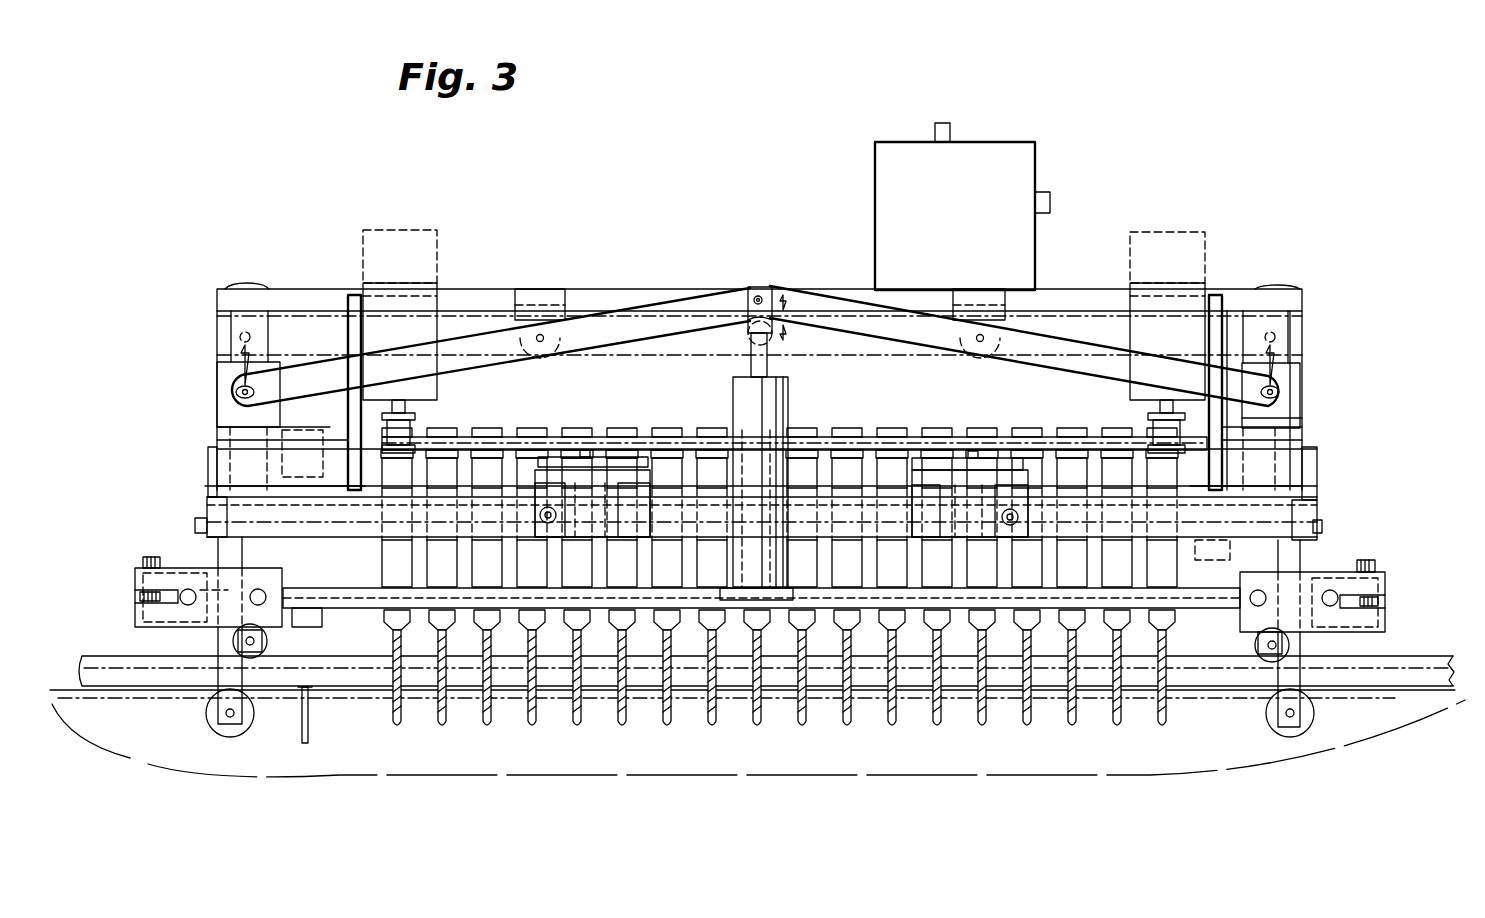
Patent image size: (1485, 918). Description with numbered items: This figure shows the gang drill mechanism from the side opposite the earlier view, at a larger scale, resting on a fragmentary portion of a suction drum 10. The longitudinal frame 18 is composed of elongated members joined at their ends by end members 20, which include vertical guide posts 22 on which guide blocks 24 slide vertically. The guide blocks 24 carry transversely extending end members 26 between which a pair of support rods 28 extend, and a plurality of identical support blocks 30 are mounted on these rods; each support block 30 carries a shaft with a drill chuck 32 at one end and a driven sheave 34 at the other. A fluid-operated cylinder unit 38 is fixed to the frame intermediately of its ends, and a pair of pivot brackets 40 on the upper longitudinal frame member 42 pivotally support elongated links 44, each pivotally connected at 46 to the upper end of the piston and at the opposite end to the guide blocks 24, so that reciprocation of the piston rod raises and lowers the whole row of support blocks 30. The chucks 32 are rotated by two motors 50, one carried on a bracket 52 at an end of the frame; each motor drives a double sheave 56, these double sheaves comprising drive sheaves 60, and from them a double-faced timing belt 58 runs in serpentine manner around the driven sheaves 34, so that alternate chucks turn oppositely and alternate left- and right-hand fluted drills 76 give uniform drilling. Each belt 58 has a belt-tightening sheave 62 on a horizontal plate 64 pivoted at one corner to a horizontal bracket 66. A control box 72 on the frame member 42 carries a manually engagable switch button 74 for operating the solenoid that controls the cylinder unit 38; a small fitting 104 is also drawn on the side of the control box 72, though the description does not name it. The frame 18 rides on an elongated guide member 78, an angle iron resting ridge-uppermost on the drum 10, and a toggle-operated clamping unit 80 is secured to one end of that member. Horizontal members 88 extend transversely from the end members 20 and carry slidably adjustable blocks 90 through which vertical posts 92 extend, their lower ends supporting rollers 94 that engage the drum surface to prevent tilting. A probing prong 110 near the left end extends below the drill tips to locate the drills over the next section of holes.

The suction drum 10 is at (1205, 768).
The longitudinal frame 18 is at (1078, 283).
The end members 20 is at (240, 620).
The vertical guide posts 22 is at (240, 545).
The guide blocks 24 is at (218, 383).
The transversely extending end members 26 is at (207, 500).
The support rods 28 is at (362, 555).
The support blocks 30 is at (460, 465).
The drill chucks 32 is at (448, 620).
The driven sheaves 34 is at (440, 430).
The fluid-operated cylinder unit 38 is at (775, 395).
The pivot brackets 40 is at (540, 300).
The upper longitudinal frame member 42 is at (640, 291).
The elongated links 44 is at (323, 290).
The pivotal connection 46 is at (760, 300).
The motor 50 is at (420, 300).
The bracket 52 is at (1300, 418).
The double sheave 56 is at (385, 425).
The double-faced timing belt 58 is at (515, 440).
The drive sheaves 60 is at (278, 425).
The belt-tightening sheave 62 is at (563, 430).
The horizontal plates 64 is at (600, 460).
The horizontal brackets 66 is at (620, 470).
The control box 72 is at (975, 160).
The switch button 74 is at (935, 130).
The drills 76 is at (445, 725).
The elongated guide member 78 is at (1398, 658).
The toggle-operated clamping unit 80 is at (262, 660).
The horizontal members 88 is at (190, 595).
The adjustable blocks 90 is at (135, 580).
The vertical posts 92 is at (230, 665).
The rollers 94 is at (222, 727).
The connector 104 is at (1050, 200).
The probing prong 110 is at (310, 712).